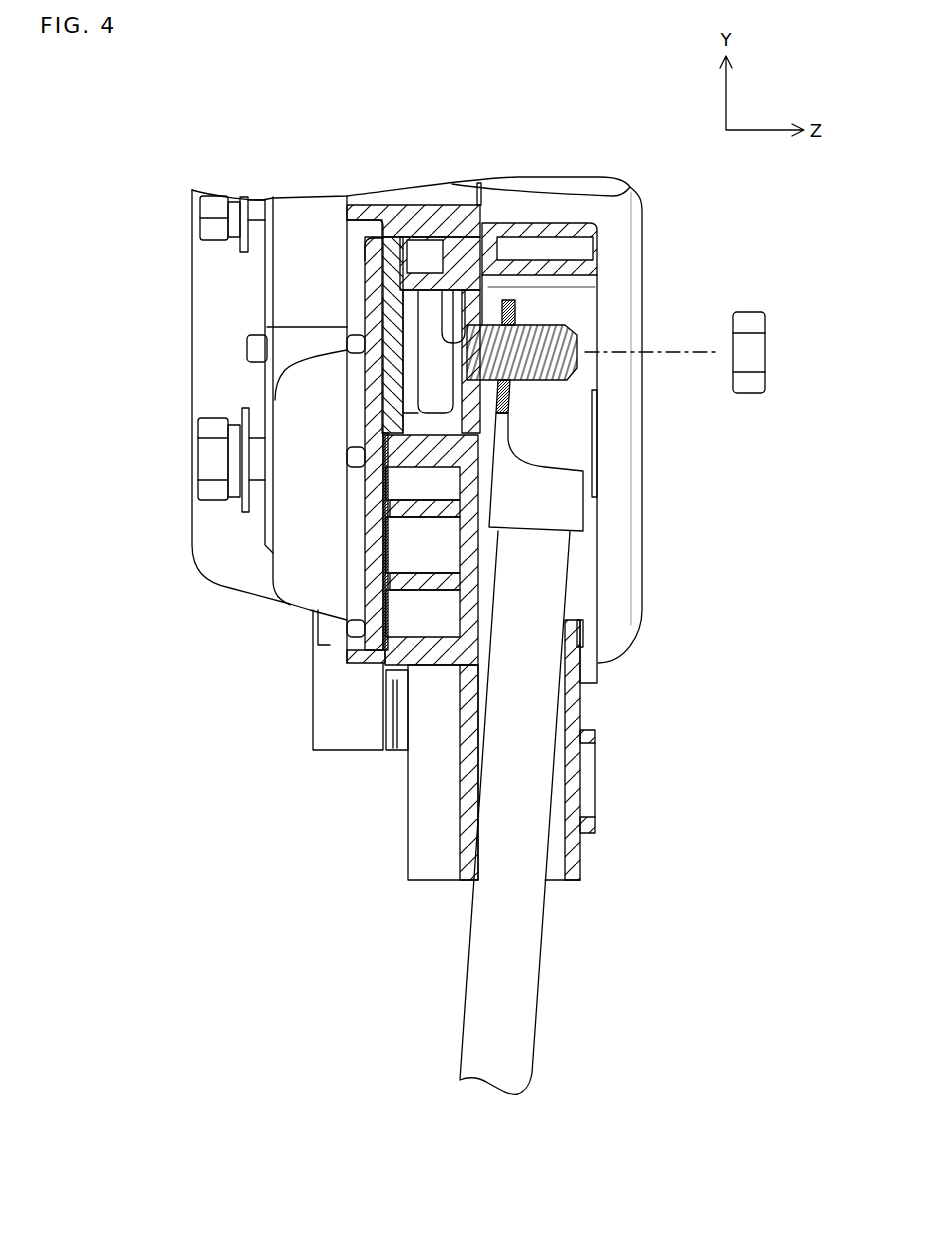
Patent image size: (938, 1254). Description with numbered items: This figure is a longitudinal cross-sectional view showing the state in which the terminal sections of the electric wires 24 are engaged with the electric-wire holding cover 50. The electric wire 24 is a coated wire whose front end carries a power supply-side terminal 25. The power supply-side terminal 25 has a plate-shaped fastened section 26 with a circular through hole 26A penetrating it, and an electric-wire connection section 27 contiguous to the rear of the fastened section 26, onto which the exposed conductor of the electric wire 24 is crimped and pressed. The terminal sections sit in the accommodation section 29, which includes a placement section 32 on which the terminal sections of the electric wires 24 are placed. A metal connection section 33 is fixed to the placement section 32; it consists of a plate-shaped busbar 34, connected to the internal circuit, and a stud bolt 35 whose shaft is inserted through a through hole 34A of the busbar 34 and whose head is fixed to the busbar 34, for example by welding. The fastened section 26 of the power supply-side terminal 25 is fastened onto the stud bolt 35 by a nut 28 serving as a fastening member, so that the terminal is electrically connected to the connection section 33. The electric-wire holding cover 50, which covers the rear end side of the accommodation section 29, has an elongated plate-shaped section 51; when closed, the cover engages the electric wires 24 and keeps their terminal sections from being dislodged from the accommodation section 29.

The electric wire 24 is at (525, 933).
The power supply-side terminal 25 is at (648, 416).
The fastened section 26 is at (629, 394).
The through hole 26A is at (500, 374).
The electric-wire connection section 27 is at (557, 500).
The nut 28 is at (753, 352).
The accommodation section 29 is at (602, 122).
The placement section 32 is at (477, 717).
The connection section 33 is at (462, 241).
The busbar 34 is at (433, 260).
The through hole 34A is at (445, 290).
The stud bolt 35 is at (533, 343).
The electric-wire holding cover 50 is at (649, 750).
The plate-shaped section 51 is at (577, 777).